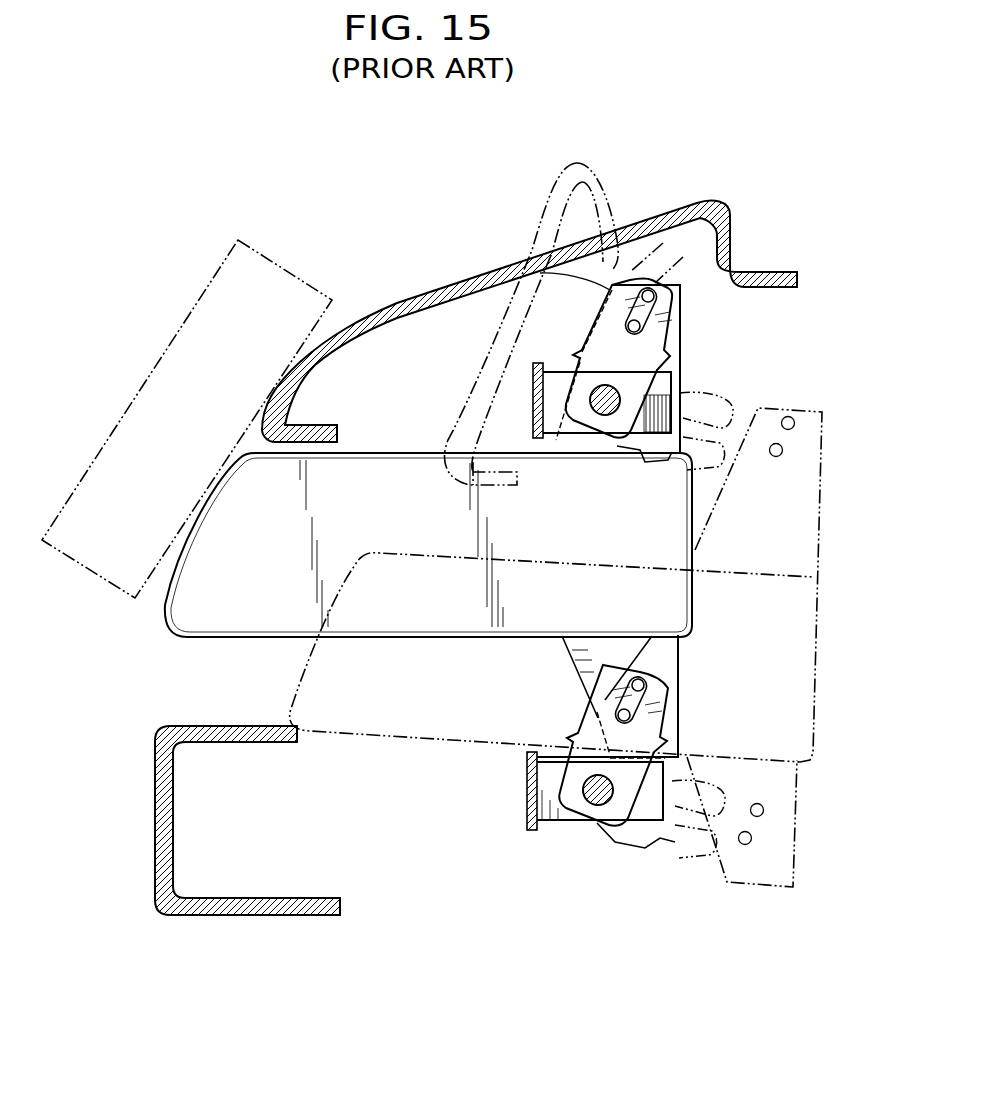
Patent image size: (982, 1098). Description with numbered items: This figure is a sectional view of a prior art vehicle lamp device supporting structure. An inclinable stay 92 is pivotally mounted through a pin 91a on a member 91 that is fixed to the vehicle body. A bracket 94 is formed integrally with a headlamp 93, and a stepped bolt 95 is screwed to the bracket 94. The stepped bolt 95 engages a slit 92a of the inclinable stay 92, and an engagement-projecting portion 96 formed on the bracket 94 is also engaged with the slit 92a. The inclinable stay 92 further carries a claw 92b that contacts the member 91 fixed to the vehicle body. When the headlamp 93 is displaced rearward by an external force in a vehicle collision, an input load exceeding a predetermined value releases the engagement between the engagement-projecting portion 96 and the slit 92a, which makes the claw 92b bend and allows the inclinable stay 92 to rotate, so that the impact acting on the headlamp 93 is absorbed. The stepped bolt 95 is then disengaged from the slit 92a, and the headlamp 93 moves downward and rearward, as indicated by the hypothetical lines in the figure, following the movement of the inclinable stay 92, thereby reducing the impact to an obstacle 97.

The member fixed to the vehicle body 91 is at (538, 437).
The pin 91a is at (597, 400).
The inclinable stay 92 is at (630, 423).
The slit 92a is at (648, 290).
The claw 92b is at (583, 352).
The headlamp 93 is at (208, 638).
The bracket 94 is at (682, 343).
The stepped bolt 95 is at (545, 272).
The engagement-projecting portion 96 is at (654, 298).
The obstacle 97 is at (173, 378).